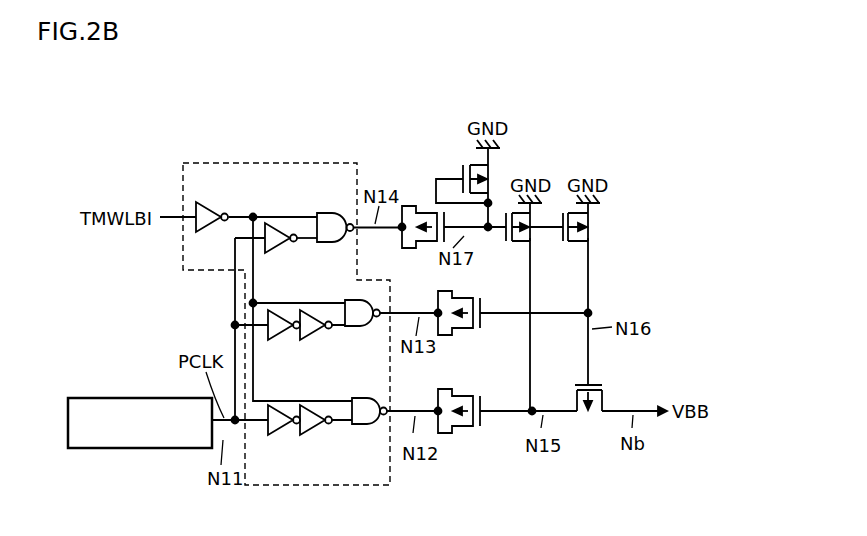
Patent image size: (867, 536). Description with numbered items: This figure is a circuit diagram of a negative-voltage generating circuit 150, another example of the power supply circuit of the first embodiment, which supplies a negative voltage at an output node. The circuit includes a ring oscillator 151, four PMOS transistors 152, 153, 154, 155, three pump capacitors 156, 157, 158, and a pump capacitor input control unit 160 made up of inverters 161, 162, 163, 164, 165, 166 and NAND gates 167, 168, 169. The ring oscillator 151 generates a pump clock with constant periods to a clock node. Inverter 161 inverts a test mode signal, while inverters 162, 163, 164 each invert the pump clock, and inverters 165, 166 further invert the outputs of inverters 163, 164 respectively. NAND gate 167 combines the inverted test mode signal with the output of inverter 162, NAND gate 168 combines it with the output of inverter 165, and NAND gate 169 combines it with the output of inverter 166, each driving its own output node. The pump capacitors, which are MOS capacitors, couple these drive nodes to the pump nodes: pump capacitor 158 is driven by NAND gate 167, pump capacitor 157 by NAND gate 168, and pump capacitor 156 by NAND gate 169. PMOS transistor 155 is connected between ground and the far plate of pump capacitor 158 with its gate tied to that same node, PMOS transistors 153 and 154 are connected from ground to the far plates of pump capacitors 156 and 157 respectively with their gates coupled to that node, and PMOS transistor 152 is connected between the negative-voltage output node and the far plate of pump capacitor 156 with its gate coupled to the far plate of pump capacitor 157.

The negative-voltage generating circuit 150 is at (700, 87).
The ring oscillator 151 is at (160, 450).
The PMOS transistor 152 is at (597, 417).
The PMOS transistor 153 is at (530, 233).
The PMOS transistor 154 is at (583, 217).
The PMOS transistor 155 is at (482, 172).
The pump capacitor 156 is at (470, 393).
The pump capacitor 157 is at (468, 297).
The pump capacitor 158 is at (410, 204).
The pump capacitor input control unit 160 is at (265, 161).
The inverter 161 is at (206, 201).
The inverter 162 is at (277, 247).
The inverter 163 is at (286, 338).
The inverter 164 is at (283, 432).
The inverter 165 is at (316, 338).
The inverter 166 is at (315, 433).
The NAND gate 167 is at (327, 243).
The NAND gate 168 is at (378, 302).
The NAND gate 169 is at (366, 396).